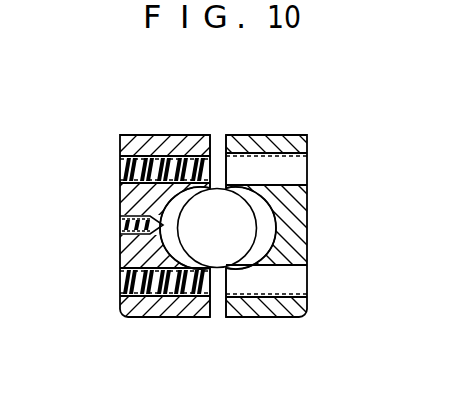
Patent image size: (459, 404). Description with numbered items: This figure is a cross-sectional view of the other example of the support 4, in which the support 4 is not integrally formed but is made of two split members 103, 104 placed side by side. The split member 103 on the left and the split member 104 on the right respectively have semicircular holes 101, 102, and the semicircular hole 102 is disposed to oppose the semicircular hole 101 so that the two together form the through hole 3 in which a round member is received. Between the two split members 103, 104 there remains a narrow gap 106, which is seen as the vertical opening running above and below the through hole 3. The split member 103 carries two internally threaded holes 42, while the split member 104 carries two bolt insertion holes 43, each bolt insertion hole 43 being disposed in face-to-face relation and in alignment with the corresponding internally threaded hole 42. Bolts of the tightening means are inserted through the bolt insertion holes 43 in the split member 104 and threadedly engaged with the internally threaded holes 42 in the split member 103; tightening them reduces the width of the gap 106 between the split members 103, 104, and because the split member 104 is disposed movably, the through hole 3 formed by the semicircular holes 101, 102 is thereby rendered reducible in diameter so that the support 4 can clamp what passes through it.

The support 4 is at (131, 324).
The through hole 3 is at (232, 222).
The split member 103 is at (157, 140).
The split member 104 is at (270, 142).
The gap 106 is at (218, 147).
The internally threaded hole 42 is at (121, 169).
The bolt insertion hole 43 is at (297, 168).
The semicircular hole 101 is at (203, 242).
The semicircular hole 102 is at (232, 242).